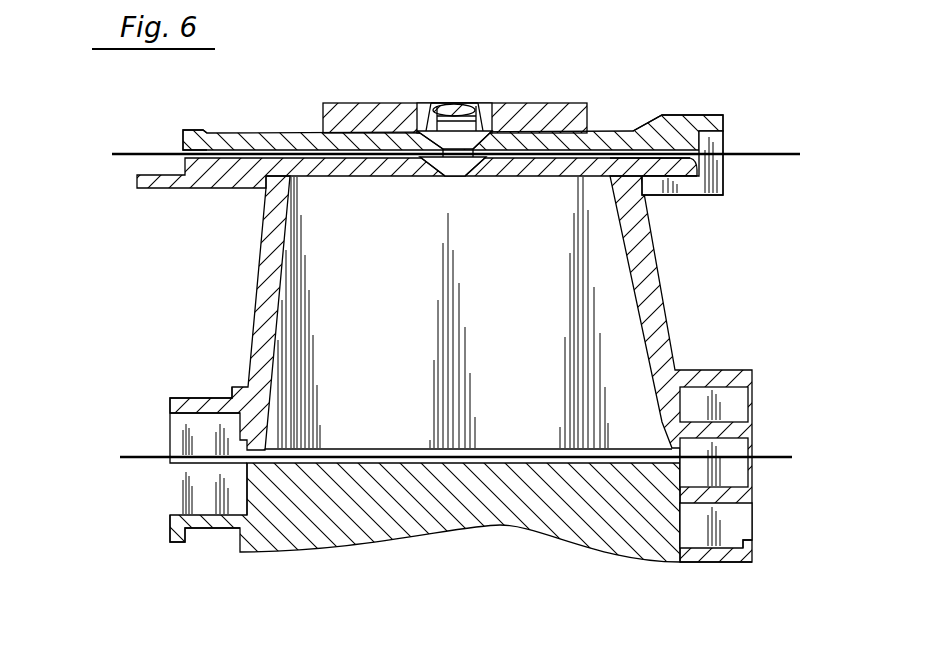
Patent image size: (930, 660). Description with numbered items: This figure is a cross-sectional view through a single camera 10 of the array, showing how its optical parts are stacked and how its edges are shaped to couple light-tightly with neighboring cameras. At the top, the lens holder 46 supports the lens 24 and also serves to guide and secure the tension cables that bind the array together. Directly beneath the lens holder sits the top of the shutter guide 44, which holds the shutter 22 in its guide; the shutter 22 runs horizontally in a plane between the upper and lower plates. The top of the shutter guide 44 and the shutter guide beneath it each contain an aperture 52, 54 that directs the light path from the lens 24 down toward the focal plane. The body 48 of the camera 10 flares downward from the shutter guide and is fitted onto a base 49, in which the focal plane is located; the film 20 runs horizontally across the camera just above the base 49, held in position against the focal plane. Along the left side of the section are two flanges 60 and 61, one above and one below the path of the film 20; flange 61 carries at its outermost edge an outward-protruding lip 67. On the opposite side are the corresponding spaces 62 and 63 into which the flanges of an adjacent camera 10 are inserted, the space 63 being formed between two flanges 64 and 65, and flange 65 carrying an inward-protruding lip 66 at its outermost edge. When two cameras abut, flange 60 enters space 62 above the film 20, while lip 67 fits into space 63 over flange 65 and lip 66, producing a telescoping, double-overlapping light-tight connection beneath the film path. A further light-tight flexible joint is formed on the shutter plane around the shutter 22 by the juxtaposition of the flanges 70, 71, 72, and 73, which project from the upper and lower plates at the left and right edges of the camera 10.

The camera 10 is at (100, 243).
The film 20 is at (767, 455).
The shutter 22 is at (780, 153).
The lens 24 is at (446, 106).
The top of the shutter guide 44 is at (620, 136).
The lens holder 46 is at (548, 118).
The body 48 is at (662, 318).
The base 49 is at (342, 518).
The aperture 52 is at (436, 182).
The aperture 54 is at (477, 168).
The flange 60 is at (192, 400).
The flange 61 is at (212, 522).
The space 62 is at (733, 403).
The space 63 is at (727, 522).
The flange 64 is at (733, 497).
The flange 65 is at (703, 555).
The inward-protruding lip 66 is at (755, 545).
The outward-protruding lip 67 is at (180, 540).
The flange 70 is at (680, 128).
The flange 71 is at (680, 185).
The flange 72 is at (190, 133).
The flange 73 is at (167, 187).